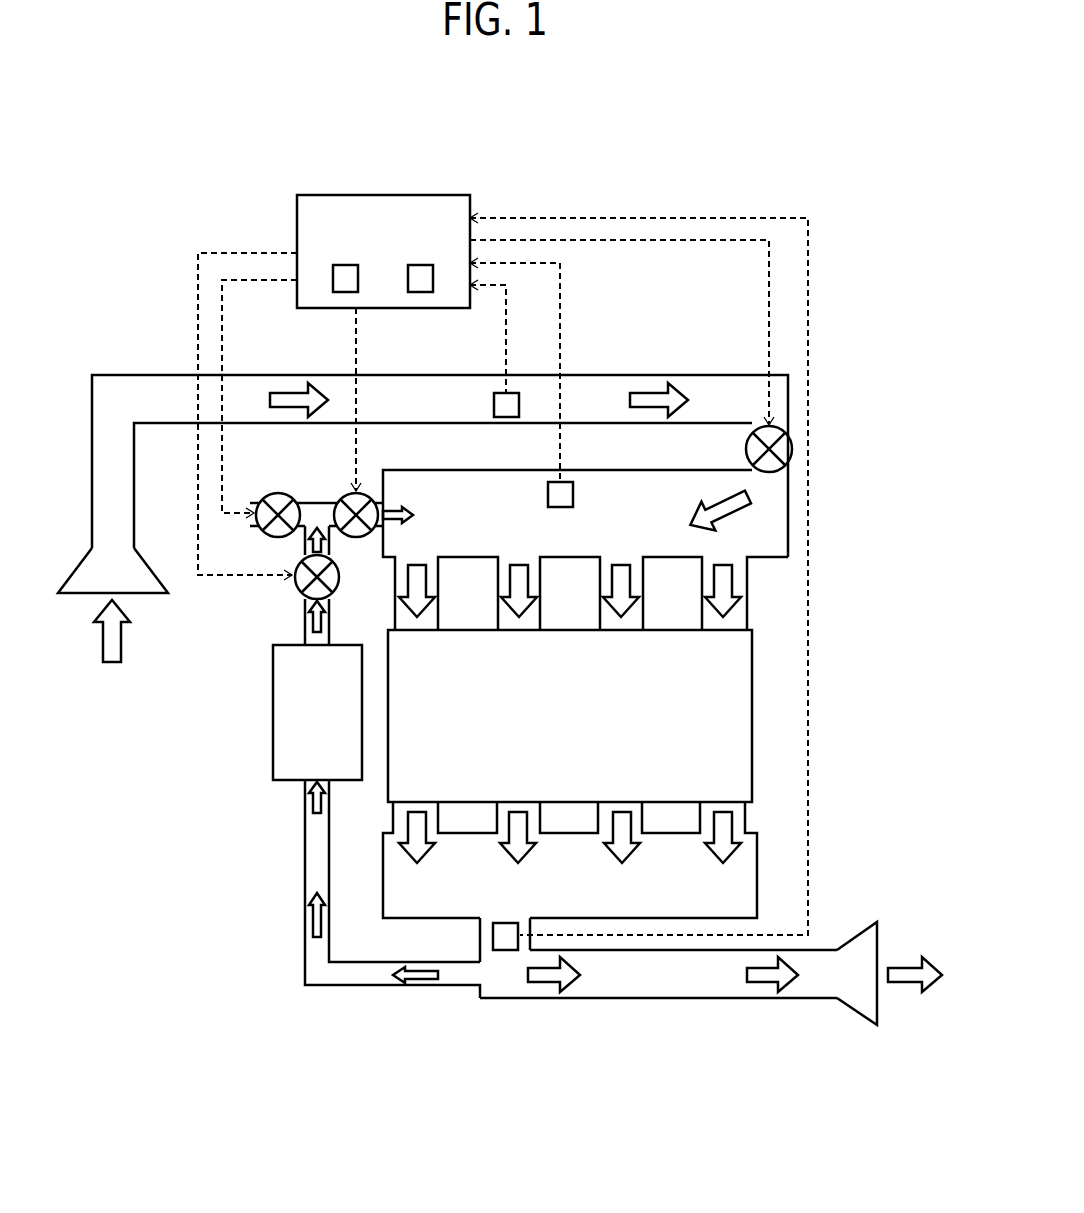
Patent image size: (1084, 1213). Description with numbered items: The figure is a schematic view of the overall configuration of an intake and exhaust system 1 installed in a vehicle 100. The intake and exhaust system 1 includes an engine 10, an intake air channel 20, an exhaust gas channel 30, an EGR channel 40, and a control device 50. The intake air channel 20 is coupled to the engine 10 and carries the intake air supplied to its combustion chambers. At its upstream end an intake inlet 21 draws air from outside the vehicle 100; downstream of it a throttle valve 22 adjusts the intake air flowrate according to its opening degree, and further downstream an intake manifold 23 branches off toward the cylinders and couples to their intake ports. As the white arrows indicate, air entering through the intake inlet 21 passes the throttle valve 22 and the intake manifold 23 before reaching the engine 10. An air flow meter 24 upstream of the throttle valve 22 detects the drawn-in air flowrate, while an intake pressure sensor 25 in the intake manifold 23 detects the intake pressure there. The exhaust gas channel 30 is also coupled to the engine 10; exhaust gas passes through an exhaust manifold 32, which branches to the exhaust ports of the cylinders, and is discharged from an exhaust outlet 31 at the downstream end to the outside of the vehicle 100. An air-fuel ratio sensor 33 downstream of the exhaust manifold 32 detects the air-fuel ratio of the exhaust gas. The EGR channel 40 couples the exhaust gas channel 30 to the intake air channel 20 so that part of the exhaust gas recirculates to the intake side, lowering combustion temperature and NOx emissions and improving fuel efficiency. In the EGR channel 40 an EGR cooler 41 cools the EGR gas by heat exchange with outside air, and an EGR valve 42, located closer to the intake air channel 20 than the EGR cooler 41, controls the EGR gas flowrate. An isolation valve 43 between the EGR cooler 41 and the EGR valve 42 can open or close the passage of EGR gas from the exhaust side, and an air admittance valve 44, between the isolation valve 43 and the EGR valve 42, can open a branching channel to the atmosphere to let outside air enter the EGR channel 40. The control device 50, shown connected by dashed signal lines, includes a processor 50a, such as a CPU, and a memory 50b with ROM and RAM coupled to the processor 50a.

The vehicle 100 is at (107, 150).
The intake and exhaust system 1 is at (147, 240).
The engine 10 is at (752, 715).
The intake air channel 20 is at (620, 375).
The intake inlet 21 is at (160, 595).
The throttle valve 22 is at (792, 449).
The intake manifold 23 is at (790, 532).
The air flow meter 24 is at (512, 393).
The intake pressure sensor 25 is at (572, 482).
The exhaust gas channel 30 is at (620, 998).
The exhaust outlet 31 is at (880, 1030).
The exhaust manifold 32 is at (757, 877).
The air-fuel ratio sensor 33 is at (508, 952).
The EGR channel 40 is at (305, 930).
The EGR cooler 41 is at (273, 710).
The EGR valve 42 is at (348, 493).
The isolation valve 43 is at (298, 590).
The air admittance valve 44 is at (270, 493).
The control device 50 is at (380, 195).
The processor 50a is at (346, 265).
The memory 50b is at (421, 265).